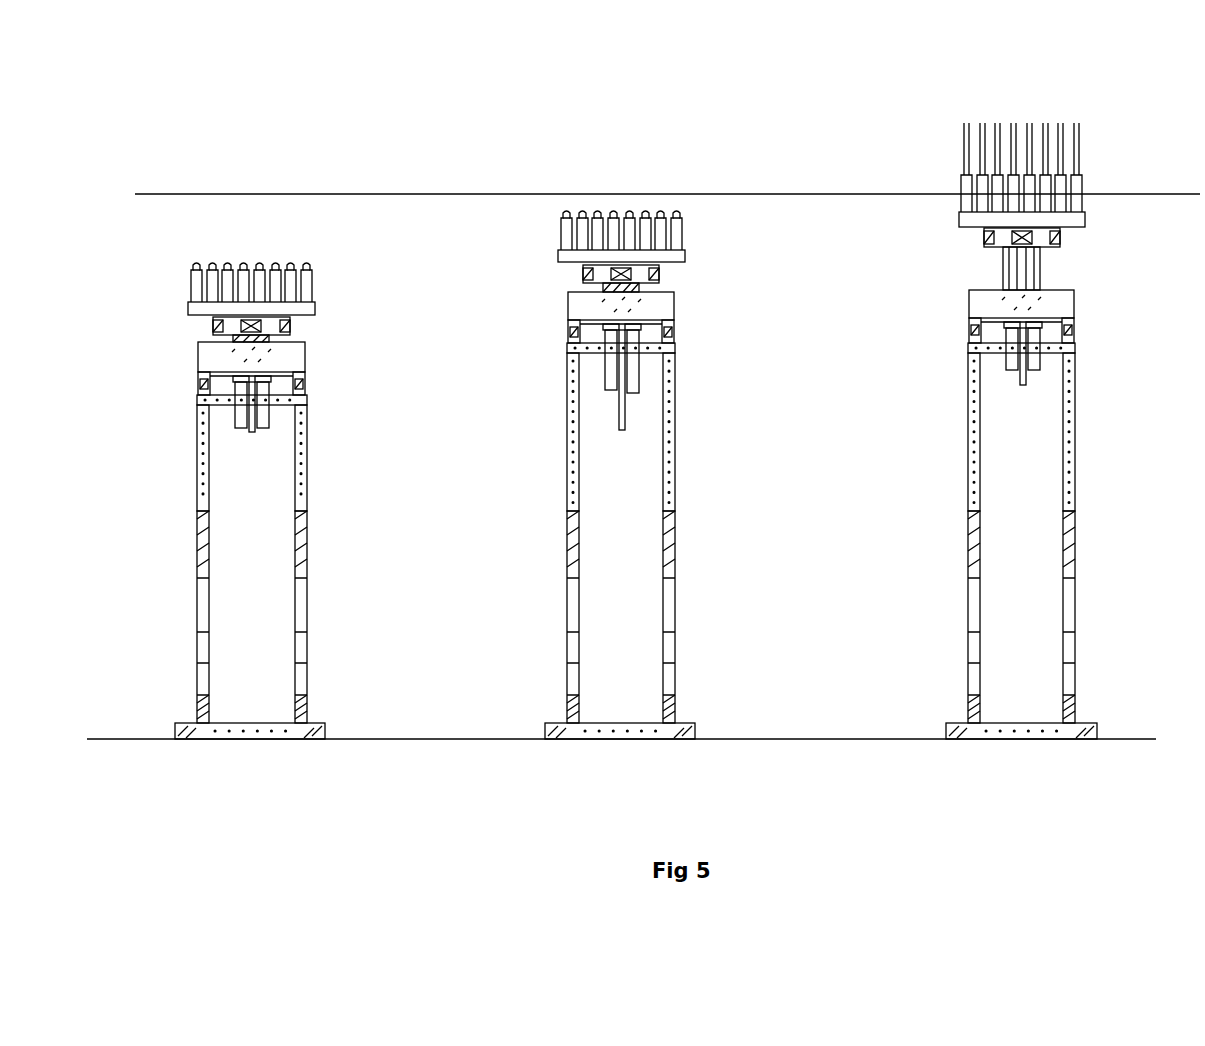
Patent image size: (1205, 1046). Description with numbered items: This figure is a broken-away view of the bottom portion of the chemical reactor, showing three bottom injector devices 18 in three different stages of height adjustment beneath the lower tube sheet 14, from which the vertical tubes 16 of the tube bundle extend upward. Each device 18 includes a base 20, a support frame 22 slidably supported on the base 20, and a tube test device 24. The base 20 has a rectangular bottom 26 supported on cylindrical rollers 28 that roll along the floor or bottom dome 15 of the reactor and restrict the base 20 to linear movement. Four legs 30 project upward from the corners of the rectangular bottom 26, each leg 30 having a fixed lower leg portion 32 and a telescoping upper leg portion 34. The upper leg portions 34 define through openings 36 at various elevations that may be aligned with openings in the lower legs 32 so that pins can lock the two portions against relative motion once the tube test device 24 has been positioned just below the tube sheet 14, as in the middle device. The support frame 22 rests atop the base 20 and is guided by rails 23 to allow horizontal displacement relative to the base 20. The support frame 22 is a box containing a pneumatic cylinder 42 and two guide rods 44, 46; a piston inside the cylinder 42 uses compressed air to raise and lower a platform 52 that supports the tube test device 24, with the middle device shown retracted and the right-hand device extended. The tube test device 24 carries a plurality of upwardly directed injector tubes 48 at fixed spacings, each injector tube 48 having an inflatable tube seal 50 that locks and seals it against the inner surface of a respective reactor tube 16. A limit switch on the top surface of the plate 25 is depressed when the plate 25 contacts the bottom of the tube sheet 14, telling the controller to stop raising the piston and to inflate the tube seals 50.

The lower tube sheet 14 is at (167, 194).
The bottom head floor 15 is at (110, 738).
The vertical tubes 16 is at (1040, 123).
The device 18 is at (150, 427).
The base 20 is at (185, 598).
The support frame 22 is at (320, 355).
The rails 23 is at (200, 383).
The tube test device 24 is at (178, 296).
The plate 25 is at (960, 222).
The rectangular bottom 26 is at (258, 733).
The rollers 28 is at (188, 738).
The legs 30 is at (205, 672).
The fixed lower leg portion 32 is at (213, 620).
The telescoping upper leg portion 34 is at (198, 467).
The through openings 36 is at (675, 445).
The pneumatic cylinder 42 is at (622, 432).
The guide rod 44 is at (607, 390).
The guide rod 46 is at (640, 388).
The injector tubes 48 is at (236, 263).
The inflatable tube seal 50 is at (300, 272).
The platform 52 is at (292, 327).